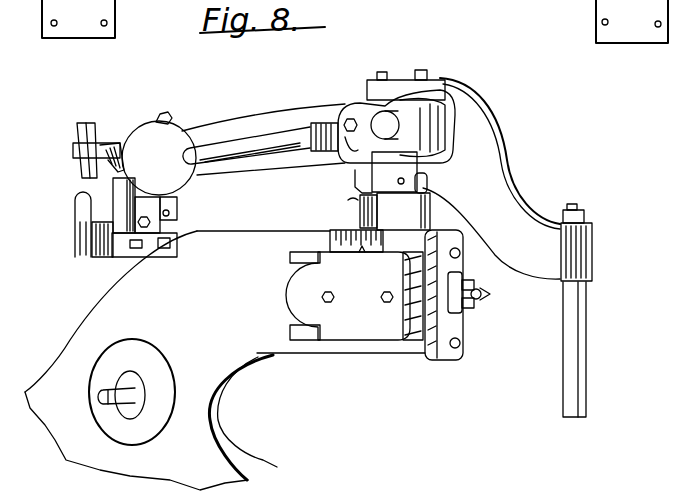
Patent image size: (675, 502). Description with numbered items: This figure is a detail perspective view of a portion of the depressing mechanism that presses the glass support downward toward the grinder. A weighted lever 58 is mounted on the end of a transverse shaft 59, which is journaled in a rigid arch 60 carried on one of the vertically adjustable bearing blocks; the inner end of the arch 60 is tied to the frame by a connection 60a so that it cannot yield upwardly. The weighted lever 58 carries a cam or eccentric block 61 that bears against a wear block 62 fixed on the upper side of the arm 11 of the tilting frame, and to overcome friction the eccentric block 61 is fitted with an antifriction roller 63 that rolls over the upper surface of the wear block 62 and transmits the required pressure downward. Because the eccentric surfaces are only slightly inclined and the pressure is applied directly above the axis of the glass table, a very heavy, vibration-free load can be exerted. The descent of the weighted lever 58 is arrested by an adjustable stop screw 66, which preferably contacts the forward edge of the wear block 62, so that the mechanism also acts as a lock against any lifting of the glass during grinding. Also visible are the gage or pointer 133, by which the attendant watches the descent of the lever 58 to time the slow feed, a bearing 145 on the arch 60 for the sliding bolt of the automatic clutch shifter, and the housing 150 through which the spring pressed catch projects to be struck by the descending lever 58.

The arm 11 is at (278, 300).
The weighted lever 58 is at (232, 148).
The transverse shaft 59 is at (390, 120).
The arch 60 is at (308, 112).
The connection 60a is at (578, 370).
The eccentric block 61 is at (400, 166).
The wear block 62 is at (405, 214).
The antifriction roller 63 is at (425, 187).
The adjustable stop screw 66 is at (352, 215).
The gage or pointer 133 is at (75, 143).
The bearing 145 is at (180, 207).
The housing 150 is at (115, 190).